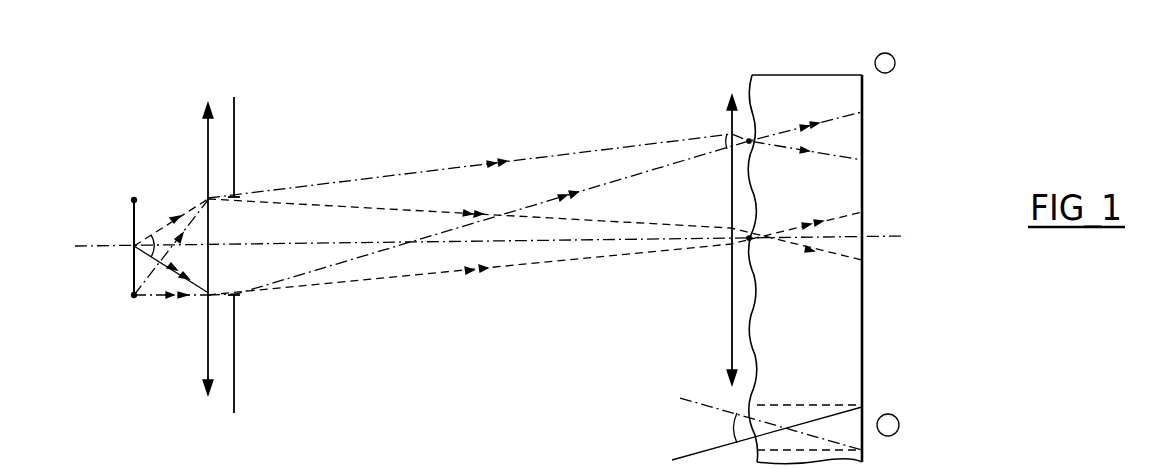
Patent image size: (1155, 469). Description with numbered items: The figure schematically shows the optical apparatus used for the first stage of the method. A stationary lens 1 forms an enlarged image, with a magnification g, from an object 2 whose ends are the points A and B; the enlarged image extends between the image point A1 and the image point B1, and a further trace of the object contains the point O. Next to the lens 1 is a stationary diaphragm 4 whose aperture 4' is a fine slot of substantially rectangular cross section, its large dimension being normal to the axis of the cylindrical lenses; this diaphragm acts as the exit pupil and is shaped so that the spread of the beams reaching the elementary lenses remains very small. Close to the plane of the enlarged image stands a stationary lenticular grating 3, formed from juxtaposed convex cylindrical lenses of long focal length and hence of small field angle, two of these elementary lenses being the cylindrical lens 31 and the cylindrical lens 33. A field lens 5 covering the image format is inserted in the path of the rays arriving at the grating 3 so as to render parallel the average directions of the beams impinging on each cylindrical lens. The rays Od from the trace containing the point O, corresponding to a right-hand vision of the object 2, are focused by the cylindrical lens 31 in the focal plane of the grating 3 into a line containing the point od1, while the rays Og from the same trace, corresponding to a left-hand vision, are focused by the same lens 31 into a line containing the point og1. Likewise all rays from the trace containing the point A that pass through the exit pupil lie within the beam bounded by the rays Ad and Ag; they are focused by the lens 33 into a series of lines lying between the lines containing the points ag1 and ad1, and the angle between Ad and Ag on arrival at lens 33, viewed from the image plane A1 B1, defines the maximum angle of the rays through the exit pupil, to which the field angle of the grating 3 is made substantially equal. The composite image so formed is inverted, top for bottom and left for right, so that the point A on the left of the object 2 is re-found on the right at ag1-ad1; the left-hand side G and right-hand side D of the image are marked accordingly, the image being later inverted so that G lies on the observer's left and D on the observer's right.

The stationary lens 1 is at (207, 360).
The object 2 is at (132, 273).
The lenticular grating 3 is at (823, 100).
The cylindrical lens 31 is at (750, 256).
The cylindrical lens 33 is at (755, 128).
The stationary diaphragm 4 is at (257, 357).
The aperture 4' is at (261, 156).
The field lens 5 is at (731, 118).
The point A of the object A is at (135, 296).
The point B of the object B is at (133, 198).
The point O of the object O is at (133, 246).
The image point A1 is at (749, 138).
The image point B1 is at (750, 338).
The rays Od is at (433, 212).
The rays Og is at (430, 276).
The ray Ad is at (640, 143).
The ray Ag is at (648, 174).
The point ag1 is at (862, 115).
The point ad1 is at (862, 157).
The point og1 is at (862, 205).
The point od1 is at (862, 258).
The left-hand side of the image G is at (885, 63).
The right-hand side of the image D is at (888, 425).